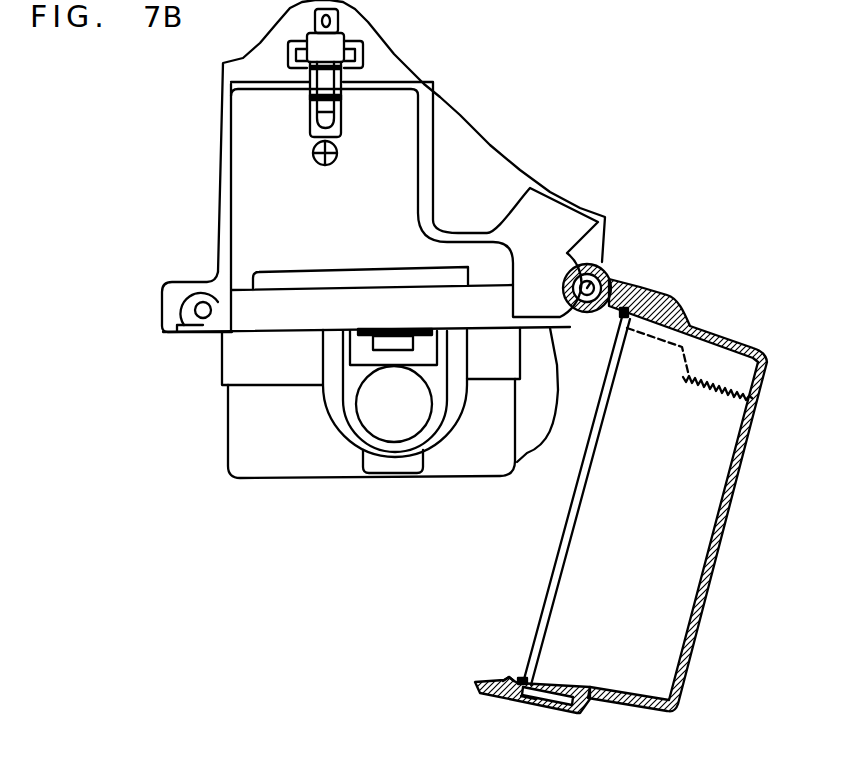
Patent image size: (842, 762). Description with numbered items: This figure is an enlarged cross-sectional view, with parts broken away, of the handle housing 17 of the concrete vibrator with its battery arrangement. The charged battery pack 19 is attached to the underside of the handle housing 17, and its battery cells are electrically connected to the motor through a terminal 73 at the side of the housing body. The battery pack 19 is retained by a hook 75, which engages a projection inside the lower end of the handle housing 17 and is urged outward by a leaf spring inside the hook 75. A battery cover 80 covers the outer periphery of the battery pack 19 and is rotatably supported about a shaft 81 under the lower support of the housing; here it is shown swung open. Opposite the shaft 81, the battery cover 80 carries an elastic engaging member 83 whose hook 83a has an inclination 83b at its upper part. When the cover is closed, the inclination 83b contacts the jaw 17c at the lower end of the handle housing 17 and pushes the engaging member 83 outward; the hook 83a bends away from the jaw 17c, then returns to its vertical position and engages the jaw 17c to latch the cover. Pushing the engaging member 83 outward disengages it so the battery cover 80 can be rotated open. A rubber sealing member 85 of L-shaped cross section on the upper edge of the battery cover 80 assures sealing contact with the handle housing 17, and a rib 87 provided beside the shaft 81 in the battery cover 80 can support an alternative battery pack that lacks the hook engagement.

The handle housing 17 is at (220, 116).
The jaw 17c is at (183, 337).
The battery pack 19 is at (283, 463).
The terminal 73 is at (350, 100).
The hook 75 is at (413, 402).
The battery cover 80 is at (723, 520).
The shaft 81 is at (603, 274).
The engaging member 83 is at (480, 683).
The hook 83a is at (518, 676).
The inclination 83b is at (510, 677).
The rubber sealing member 85 is at (620, 318).
The rib 87 is at (710, 362).